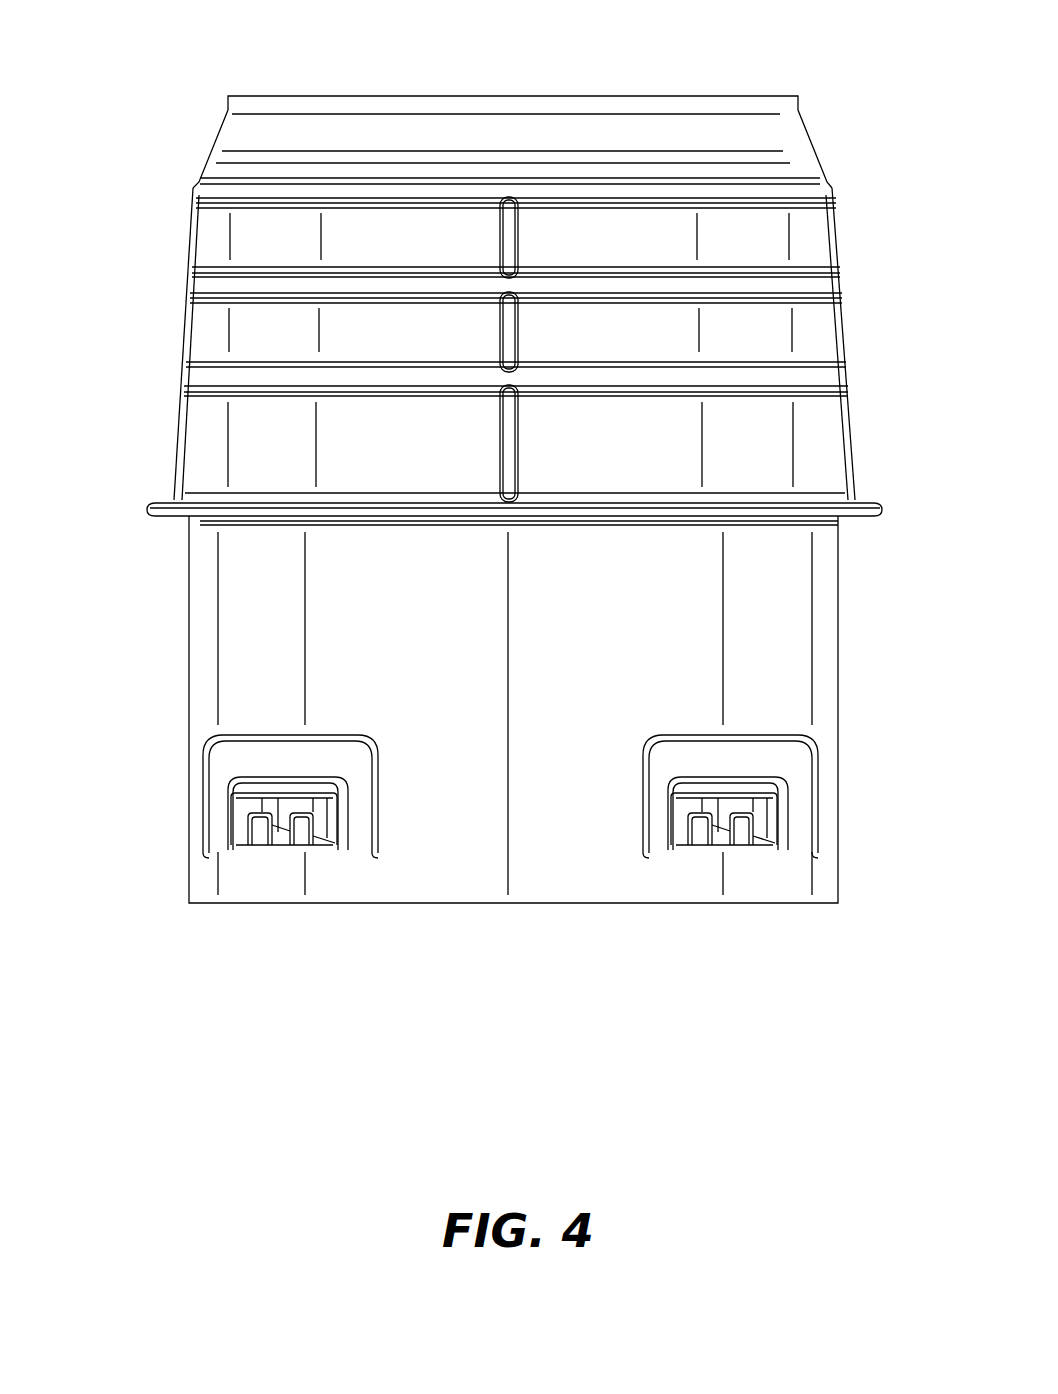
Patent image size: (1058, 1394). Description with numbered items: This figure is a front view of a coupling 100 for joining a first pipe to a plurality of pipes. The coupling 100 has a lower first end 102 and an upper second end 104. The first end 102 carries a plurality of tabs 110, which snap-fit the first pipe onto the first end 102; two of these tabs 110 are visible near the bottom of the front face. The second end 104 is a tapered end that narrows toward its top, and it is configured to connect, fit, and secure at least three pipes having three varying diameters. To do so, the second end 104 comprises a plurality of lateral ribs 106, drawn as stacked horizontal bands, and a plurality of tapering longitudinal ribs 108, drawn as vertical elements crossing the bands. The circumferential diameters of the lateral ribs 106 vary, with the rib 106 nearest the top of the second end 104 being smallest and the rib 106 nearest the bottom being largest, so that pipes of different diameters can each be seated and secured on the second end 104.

The coupling 100 is at (922, 25).
The first end 102 is at (120, 532).
The second end 104 is at (116, 104).
The lateral ribs 106 is at (372, 285).
The longitudinal ribs 108 is at (518, 232).
The tabs 110 is at (362, 838).